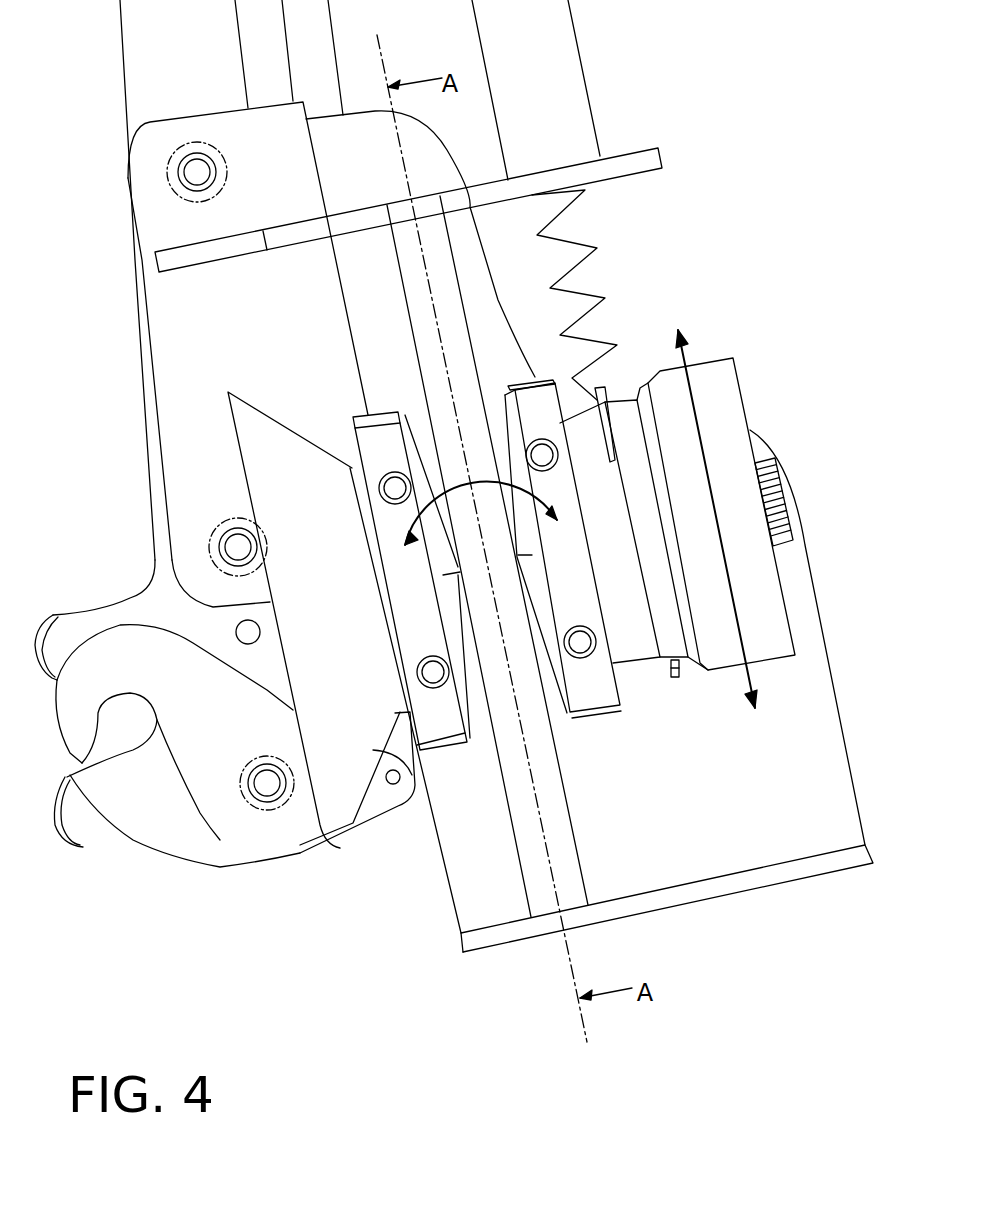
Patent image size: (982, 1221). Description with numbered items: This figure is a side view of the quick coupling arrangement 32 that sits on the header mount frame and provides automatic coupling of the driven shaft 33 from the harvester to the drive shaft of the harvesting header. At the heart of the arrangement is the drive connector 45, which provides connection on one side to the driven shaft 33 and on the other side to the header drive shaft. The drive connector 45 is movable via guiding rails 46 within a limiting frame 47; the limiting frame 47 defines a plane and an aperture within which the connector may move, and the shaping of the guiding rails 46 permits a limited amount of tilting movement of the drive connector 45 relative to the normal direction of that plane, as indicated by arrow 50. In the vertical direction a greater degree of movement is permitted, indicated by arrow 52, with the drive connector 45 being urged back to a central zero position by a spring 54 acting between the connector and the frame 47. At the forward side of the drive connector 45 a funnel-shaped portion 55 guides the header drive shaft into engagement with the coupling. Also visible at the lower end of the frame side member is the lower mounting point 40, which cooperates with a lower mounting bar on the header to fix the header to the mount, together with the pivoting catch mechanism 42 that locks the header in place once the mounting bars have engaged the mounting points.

The quick coupling arrangement 32 is at (737, 95).
The driven shaft 33 is at (783, 500).
The lower mounting point 40 is at (80, 833).
The pivoting catch mechanism 42 is at (200, 773).
The drive connector 45 is at (633, 650).
The guiding rails 46 is at (373, 443).
The limiting frame 47 is at (535, 867).
The arrow indicating tilting movement 50 is at (400, 525).
The arrow indicating vertical movement 52 is at (693, 355).
The spring 54 is at (590, 240).
The funnel-shaped portion 55 is at (330, 787).